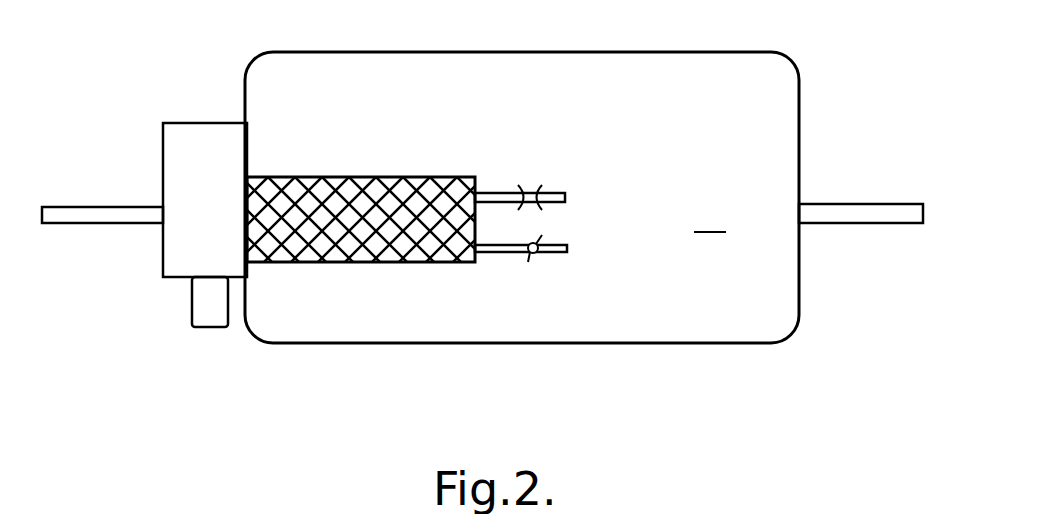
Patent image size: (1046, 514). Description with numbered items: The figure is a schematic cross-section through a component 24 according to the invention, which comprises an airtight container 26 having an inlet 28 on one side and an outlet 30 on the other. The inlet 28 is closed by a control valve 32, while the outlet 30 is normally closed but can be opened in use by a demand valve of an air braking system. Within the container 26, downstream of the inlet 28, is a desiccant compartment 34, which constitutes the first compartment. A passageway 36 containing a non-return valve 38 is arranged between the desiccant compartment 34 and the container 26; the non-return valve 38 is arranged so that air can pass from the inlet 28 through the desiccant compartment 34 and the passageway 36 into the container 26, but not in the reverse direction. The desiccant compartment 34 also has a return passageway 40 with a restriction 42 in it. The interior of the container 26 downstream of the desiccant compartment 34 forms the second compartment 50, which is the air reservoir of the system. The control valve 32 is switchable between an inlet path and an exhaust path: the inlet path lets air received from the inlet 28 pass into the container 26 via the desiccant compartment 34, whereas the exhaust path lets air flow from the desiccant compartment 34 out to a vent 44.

The component 24 is at (451, 356).
The airtight container 26 is at (799, 95).
The inlet 28 is at (97, 207).
The outlet 30 is at (877, 213).
The control valve 32 is at (163, 255).
The desiccant compartment 34 is at (412, 177).
The passageway 36 is at (500, 253).
The non-return valve 38 is at (537, 253).
The return passageway 40 is at (498, 193).
The restriction 42 is at (538, 188).
The vent 44 is at (208, 311).
The second compartment 50 is at (710, 219).